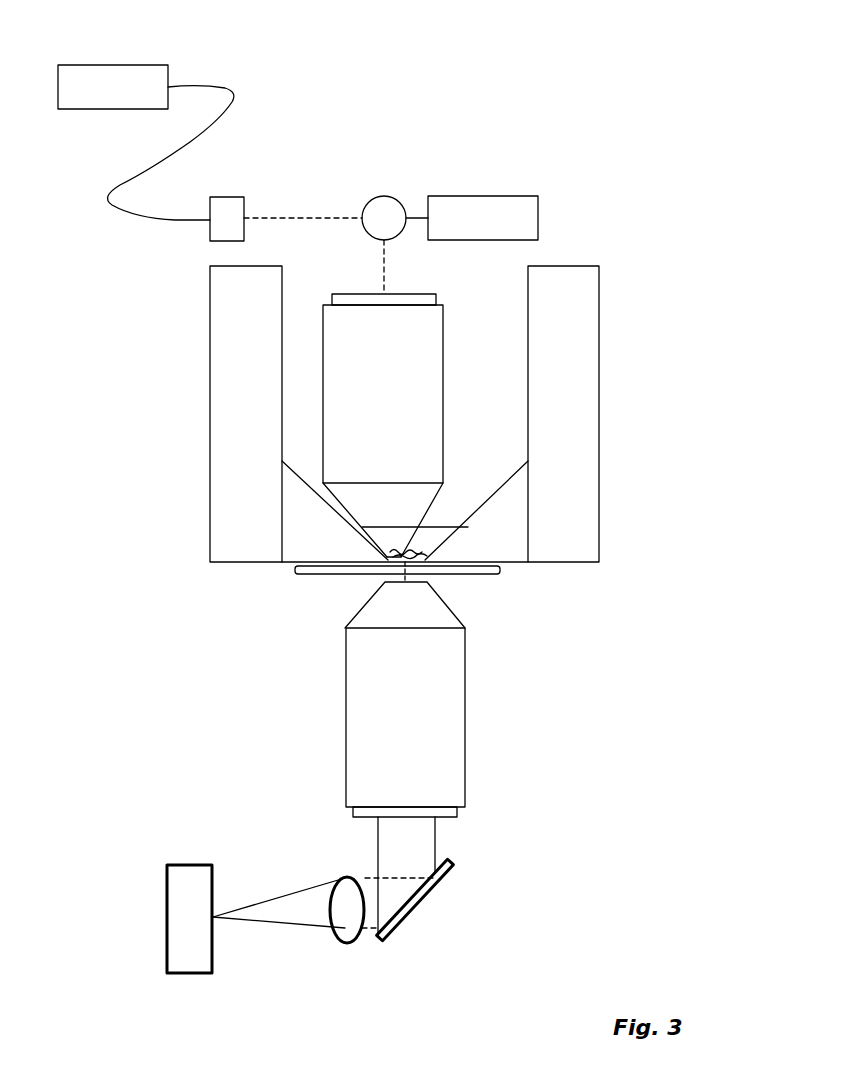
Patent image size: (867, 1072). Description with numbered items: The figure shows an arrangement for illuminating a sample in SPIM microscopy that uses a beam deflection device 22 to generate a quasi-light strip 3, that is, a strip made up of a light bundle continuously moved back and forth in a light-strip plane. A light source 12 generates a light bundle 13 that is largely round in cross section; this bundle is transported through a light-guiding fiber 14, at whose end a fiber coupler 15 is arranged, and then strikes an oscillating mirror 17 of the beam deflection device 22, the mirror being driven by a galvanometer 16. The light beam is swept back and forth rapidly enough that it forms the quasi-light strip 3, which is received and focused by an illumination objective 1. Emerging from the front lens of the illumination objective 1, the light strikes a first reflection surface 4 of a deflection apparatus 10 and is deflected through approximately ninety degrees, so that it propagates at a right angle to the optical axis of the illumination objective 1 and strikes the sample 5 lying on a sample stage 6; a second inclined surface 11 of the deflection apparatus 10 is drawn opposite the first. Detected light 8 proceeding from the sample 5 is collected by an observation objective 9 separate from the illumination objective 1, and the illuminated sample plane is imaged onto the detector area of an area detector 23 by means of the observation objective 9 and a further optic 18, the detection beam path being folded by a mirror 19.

The illumination objective 1 is at (443, 372).
The quasi-light strip 3 is at (384, 279).
The first reflection surface 4 is at (297, 474).
The sample 5 is at (413, 542).
The sample stage 6 is at (338, 574).
The detected light 8 is at (423, 835).
The observation objective 9 is at (452, 724).
The deflection apparatus 10 is at (197, 435).
The illumination beam 11 is at (507, 473).
The light source 12 is at (107, 75).
The light bundle 13 is at (305, 218).
The light-guiding fiber 14 is at (208, 138).
The fiber coupler 15 is at (226, 204).
The galvanometer 16 is at (493, 212).
The oscillating mirror 17 is at (388, 207).
The further optic 18 is at (344, 895).
The mirror 19 is at (425, 902).
The beam deflection device 22 is at (467, 140).
The area detector 23 is at (175, 905).